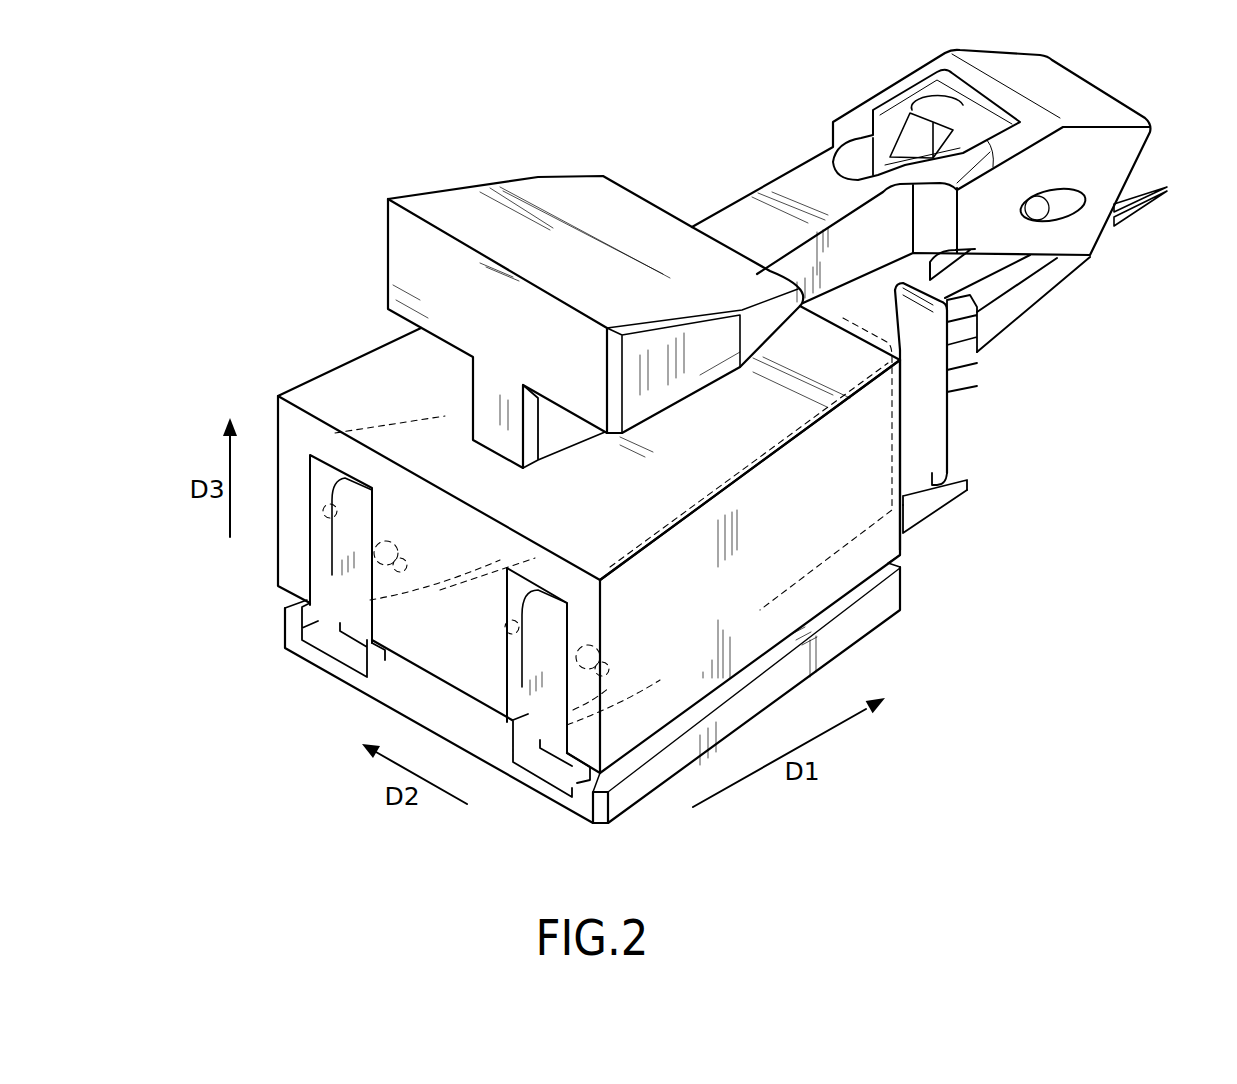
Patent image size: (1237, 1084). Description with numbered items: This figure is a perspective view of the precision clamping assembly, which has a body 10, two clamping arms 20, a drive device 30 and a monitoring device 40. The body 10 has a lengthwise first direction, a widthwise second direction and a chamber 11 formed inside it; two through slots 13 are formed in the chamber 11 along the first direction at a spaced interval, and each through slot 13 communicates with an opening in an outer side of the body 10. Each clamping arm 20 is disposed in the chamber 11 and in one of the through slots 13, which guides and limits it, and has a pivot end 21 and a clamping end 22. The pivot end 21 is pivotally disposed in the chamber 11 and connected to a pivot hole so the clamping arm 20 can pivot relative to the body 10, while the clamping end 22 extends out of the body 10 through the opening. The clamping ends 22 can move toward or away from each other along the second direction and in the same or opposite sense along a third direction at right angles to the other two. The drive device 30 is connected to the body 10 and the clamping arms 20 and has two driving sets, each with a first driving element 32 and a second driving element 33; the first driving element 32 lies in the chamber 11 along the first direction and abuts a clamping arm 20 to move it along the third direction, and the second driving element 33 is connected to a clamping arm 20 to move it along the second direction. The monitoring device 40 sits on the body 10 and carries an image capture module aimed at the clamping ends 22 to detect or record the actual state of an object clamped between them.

The body 10 is at (366, 347).
The chamber 11 is at (850, 494).
The through slots 13 is at (322, 472).
The clamping arms 20 is at (957, 428).
The pivot end 21 is at (350, 557).
The clamping end 22 is at (1145, 185).
The drive device 30 is at (928, 533).
The first driving element 32 is at (933, 498).
The second driving element 33 is at (965, 367).
The monitoring device 40 is at (847, 98).